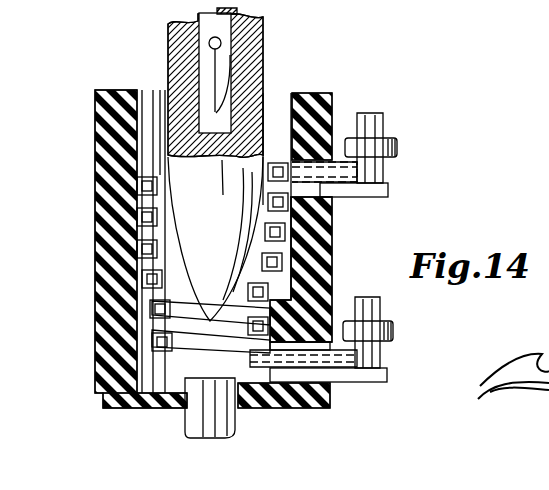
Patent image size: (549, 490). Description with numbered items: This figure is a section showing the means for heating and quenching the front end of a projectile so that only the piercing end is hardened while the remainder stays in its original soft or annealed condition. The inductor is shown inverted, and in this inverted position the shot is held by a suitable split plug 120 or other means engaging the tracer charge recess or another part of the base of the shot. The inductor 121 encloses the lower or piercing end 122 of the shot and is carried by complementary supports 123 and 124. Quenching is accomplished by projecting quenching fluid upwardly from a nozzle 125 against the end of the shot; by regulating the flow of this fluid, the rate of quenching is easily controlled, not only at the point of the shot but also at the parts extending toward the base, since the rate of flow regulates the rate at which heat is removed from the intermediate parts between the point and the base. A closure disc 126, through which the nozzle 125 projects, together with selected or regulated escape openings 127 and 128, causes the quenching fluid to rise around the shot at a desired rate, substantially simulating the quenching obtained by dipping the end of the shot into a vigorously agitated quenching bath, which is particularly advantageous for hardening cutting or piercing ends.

The split plug 120 is at (196, 15).
The inductor 121 is at (328, 235).
The piercing end of the shot 122 is at (208, 302).
The complementary support 123 is at (282, 250).
The complementary support 124 is at (97, 244).
The nozzle 125 is at (214, 362).
The closure disc 126 is at (177, 406).
The escape opening 127 is at (252, 403).
The escape opening 128 is at (338, 337).